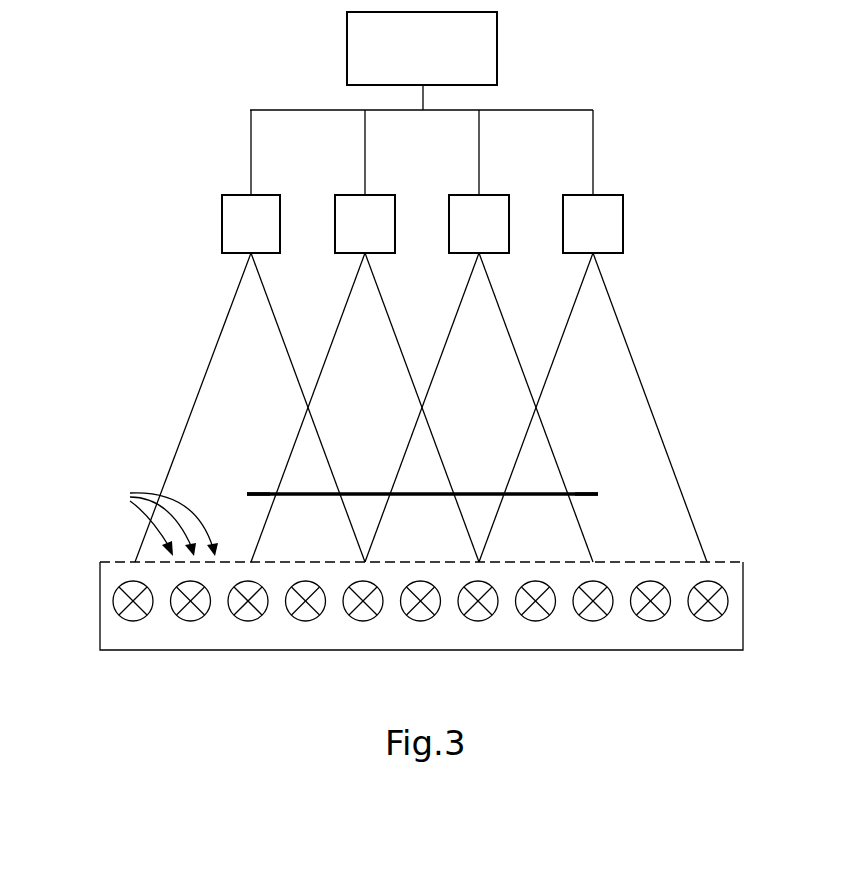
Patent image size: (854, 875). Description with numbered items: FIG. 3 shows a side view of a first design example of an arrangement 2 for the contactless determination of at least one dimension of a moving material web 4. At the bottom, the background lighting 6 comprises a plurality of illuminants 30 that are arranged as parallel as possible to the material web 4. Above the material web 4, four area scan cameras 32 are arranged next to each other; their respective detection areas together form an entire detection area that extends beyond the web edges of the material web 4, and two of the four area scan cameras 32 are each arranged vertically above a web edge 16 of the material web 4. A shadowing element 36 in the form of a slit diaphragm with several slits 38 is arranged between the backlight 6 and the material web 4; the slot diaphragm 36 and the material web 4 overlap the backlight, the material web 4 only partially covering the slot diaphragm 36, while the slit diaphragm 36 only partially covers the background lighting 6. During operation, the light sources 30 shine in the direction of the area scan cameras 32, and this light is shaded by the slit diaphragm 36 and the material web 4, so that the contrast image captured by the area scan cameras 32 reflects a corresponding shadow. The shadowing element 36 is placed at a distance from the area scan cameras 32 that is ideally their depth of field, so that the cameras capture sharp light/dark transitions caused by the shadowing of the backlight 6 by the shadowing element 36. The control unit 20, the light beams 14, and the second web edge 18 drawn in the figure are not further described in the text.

The arrangement 2 is at (100, 216).
The material web 4 is at (581, 492).
The background lighting 6 is at (399, 621).
The light beam 14 is at (640, 369).
The web edge 16 is at (240, 492).
The right edge of object 18 is at (606, 492).
The control unit 20 is at (437, 61).
The illuminant 30 is at (594, 612).
The area scan camera 32 is at (236, 193).
The shadowing element 36 is at (719, 562).
The slit 38 is at (158, 520).